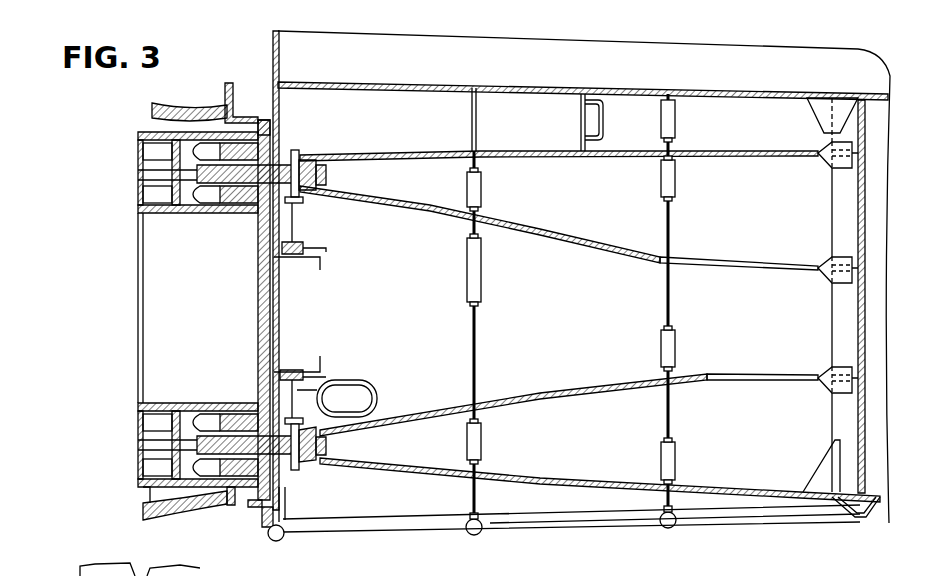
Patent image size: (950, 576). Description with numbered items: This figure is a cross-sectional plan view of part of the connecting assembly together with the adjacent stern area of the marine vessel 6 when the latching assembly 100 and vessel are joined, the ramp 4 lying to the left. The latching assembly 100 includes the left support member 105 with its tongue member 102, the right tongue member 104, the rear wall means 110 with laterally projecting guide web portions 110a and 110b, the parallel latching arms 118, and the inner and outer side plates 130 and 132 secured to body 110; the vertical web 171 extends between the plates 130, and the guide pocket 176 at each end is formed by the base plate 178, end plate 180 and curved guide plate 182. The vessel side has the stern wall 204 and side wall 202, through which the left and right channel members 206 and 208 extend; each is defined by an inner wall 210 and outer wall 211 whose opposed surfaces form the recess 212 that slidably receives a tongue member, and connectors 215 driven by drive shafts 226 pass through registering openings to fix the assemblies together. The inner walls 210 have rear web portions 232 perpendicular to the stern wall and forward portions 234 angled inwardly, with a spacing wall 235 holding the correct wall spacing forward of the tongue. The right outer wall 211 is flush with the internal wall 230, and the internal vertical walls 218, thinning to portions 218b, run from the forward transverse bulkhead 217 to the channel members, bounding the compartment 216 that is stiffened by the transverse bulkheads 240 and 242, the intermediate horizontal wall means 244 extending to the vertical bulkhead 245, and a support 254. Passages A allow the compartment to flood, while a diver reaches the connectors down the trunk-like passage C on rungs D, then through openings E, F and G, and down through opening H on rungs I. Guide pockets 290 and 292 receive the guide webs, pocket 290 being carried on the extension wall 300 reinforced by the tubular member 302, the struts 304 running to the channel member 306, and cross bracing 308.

The latching assembly 100 is at (136, 106).
The left tongue member 102 is at (310, 458).
The right tongue member 104 is at (300, 158).
The left support member 105 is at (138, 176).
The rear wall means 110 is at (262, 291).
The guide web portion 110a is at (247, 494).
The guide web portion 110b is at (272, 130).
The latching arm 118 is at (213, 142).
The inner side plate 130 is at (212, 214).
The outer side plate 132 is at (137, 135).
The vertical web 171 is at (138, 319).
The guide pocket 176 is at (187, 108).
The base plate 178 is at (180, 506).
The end plate 180 is at (230, 502).
The guide plate 182 is at (148, 511).
The side wall 202 is at (615, 485).
The stern wall 204 is at (281, 73).
The left channel member 206 is at (312, 463).
The right channel member 208 is at (318, 166).
The inner wall 210 is at (410, 224).
The outer wall 211 is at (418, 152).
The recess 212 is at (327, 438).
The connector 215 is at (330, 193).
The compartment 216 is at (563, 290).
The forward transverse bulkhead 217 is at (860, 224).
The internal vertical side wall 218 is at (520, 245).
The wall portion 218b is at (632, 263).
The drive shaft 226 is at (327, 252).
The internal wall 230 is at (537, 162).
The vertical web portion 232 is at (296, 212).
The forward portion 234 is at (370, 212).
The spacing wall 235 is at (332, 176).
The transverse bulkhead 240 is at (478, 332).
The transverse bulkhead 242 is at (672, 239).
The intermediate horizontal wall means 244 is at (372, 92).
The vertical bulkhead 245 is at (551, 90).
The support 254 is at (306, 314).
The right guide pocket 290 is at (258, 533).
The left guide pocket 292 is at (250, 118).
The extension wall 300 is at (283, 503).
The vertical tubular member 302 is at (296, 538).
The tubular strut 304 is at (588, 527).
The vertical channel member 306 is at (877, 513).
The cross bracing 308 is at (473, 503).
The passageway A is at (667, 460).
The trunk-like passage C is at (606, 98).
The foot rail D is at (598, 94).
The opening E is at (613, 170).
The opening F is at (613, 258).
The opening G is at (478, 272).
The opening H is at (352, 384).
The rung I is at (370, 392).
The ramp 4 is at (336, 346).
The marine vessel 6 is at (335, 82).